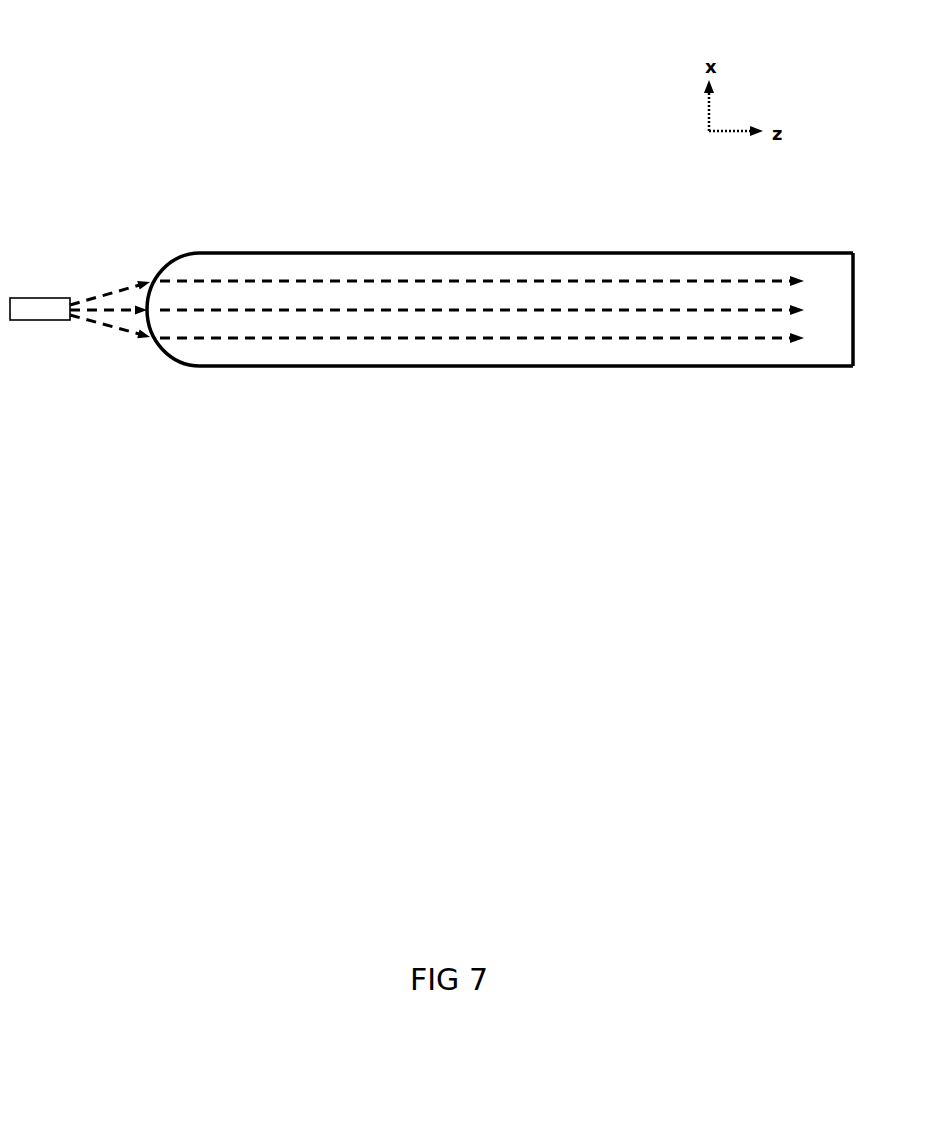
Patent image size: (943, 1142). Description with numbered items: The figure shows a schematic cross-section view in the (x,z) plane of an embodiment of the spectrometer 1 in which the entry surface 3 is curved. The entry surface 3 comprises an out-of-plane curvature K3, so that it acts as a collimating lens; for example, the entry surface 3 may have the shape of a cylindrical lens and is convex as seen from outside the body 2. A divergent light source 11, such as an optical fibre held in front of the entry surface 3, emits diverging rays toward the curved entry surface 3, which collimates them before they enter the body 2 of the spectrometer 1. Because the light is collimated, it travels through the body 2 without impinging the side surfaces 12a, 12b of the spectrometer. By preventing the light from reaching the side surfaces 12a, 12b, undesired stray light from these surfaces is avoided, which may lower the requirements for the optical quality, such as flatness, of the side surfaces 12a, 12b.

The spectrometer 1 is at (157, 74).
The body 2 is at (833, 288).
The entry surface 3 is at (143, 252).
The divergent light source 11 is at (67, 290).
The side surface 12a is at (433, 252).
The side surface 12b is at (433, 368).
The out-of-plane curvature K3 is at (160, 348).